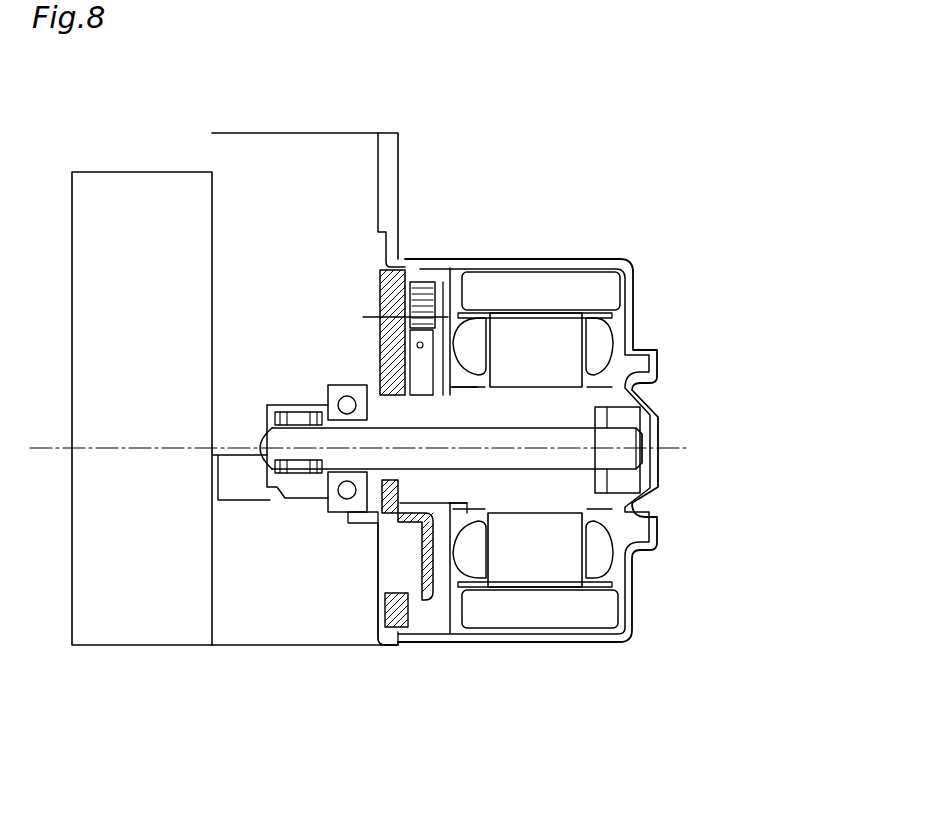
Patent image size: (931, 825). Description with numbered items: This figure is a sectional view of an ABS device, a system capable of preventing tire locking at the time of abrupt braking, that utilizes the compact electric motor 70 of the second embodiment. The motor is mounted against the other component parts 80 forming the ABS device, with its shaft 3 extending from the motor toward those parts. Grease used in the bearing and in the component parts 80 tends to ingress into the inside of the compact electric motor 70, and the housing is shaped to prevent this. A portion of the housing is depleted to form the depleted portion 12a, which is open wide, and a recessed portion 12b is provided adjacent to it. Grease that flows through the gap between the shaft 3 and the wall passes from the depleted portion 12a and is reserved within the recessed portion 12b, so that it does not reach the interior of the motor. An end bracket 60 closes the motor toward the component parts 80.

The component parts 80 is at (209, 168).
The compact electric motor 70 is at (500, 255).
The shaft 3 is at (540, 452).
The depleted portion 12a is at (375, 508).
The recessed portion 12b is at (403, 557).
The end bracket 60 is at (375, 655).